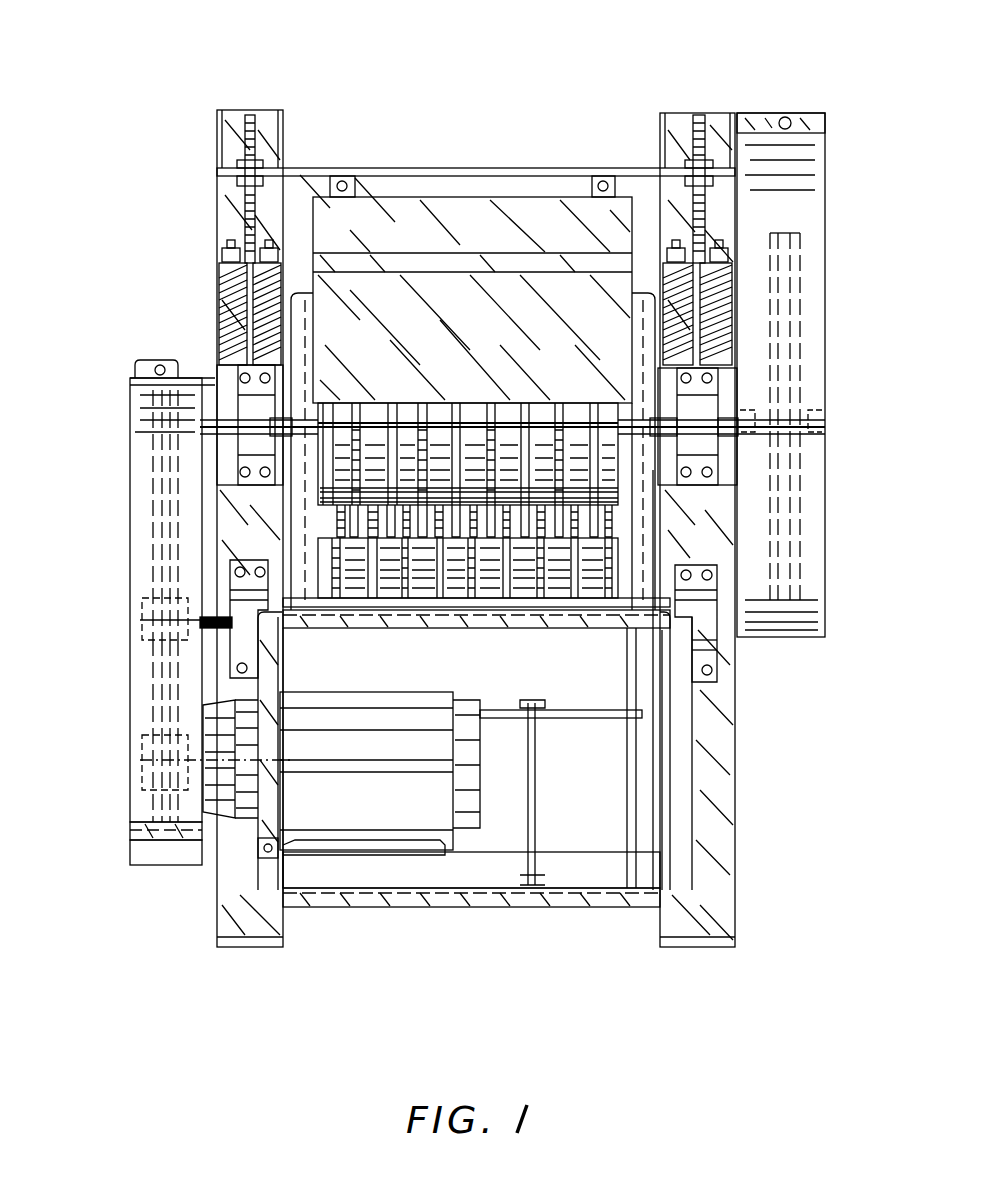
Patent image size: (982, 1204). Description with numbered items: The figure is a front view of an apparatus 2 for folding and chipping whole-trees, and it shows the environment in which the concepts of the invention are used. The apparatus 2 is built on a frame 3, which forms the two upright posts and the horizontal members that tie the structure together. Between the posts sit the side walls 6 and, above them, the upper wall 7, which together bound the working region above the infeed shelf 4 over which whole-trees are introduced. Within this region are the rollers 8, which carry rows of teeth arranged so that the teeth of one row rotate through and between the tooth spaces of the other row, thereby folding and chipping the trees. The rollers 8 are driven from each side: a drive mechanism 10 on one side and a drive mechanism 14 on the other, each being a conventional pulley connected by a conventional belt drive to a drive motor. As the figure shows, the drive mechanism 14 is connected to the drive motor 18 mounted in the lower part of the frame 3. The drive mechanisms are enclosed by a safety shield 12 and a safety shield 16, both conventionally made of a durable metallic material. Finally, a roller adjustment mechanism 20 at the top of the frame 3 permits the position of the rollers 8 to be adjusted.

The apparatus 2 is at (157, 72).
The frame 3 is at (678, 772).
The infeed shelf 4 is at (355, 598).
The side walls 6 is at (628, 572).
The upper wall 7 is at (472, 342).
The rollers 8 is at (405, 557).
The drive mechanism 10 is at (800, 245).
The safety shield 12 is at (826, 362).
The drive mechanism 14 is at (160, 481).
The safety shield 16 is at (128, 680).
The drive motor 18 is at (362, 808).
The roller adjustment mechanism 20 is at (213, 283).